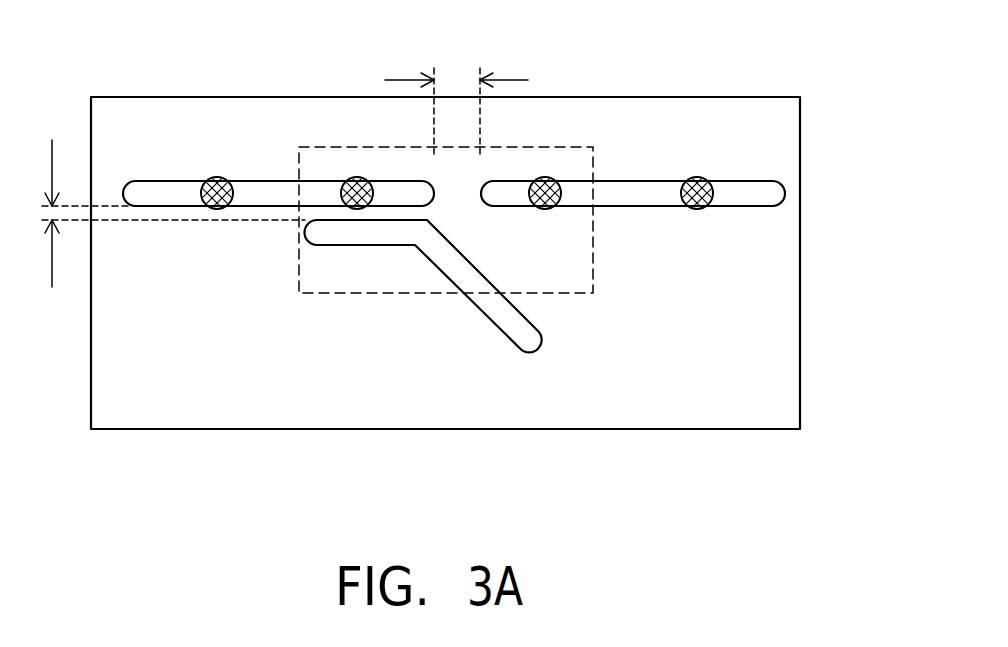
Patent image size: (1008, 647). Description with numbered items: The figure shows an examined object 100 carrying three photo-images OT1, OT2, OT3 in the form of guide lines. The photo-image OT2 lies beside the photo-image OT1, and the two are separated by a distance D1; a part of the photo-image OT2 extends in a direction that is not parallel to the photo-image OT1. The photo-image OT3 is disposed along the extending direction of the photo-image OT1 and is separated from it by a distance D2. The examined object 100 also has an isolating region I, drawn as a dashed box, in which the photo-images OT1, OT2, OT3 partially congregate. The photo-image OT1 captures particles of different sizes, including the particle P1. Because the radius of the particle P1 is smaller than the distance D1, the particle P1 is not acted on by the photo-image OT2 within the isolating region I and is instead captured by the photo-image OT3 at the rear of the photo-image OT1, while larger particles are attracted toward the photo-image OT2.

The examined object 100 is at (802, 113).
The photo-image OT1 is at (133, 190).
The photo-image OT2 is at (528, 340).
The photo-image OT3 is at (776, 193).
The particle P1 is at (213, 179).
The isolating region I is at (564, 146).
The distance D1 is at (157, 213).
The distance D2 is at (456, 98).